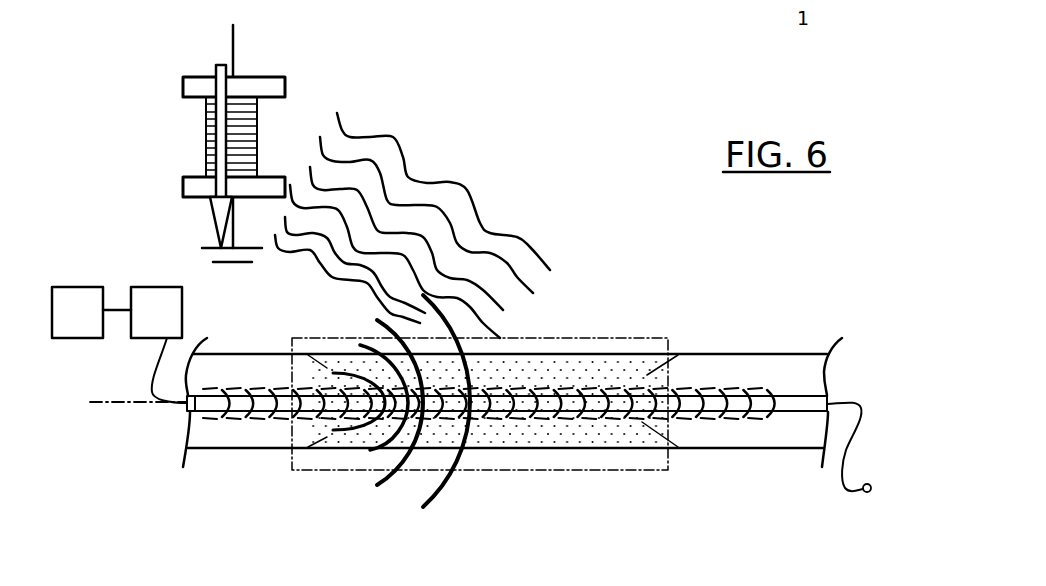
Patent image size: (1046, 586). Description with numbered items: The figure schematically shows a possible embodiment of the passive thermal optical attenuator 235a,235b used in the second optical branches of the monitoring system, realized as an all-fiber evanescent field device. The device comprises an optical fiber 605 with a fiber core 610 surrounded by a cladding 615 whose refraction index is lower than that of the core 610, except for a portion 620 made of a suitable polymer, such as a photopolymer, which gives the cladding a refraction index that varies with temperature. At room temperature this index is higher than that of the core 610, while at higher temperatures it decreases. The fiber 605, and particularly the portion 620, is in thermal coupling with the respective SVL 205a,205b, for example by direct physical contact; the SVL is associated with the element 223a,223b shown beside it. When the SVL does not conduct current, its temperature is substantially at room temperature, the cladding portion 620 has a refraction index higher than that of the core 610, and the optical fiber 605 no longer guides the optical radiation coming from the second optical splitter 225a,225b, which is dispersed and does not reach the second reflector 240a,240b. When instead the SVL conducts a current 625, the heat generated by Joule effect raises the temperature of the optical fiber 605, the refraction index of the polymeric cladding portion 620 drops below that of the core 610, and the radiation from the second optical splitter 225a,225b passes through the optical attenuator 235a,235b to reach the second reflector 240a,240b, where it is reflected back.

The SVL 205a,205b is at (263, 143).
The current 625 is at (207, 143).
The second optical splitter 225a,225b is at (160, 287).
The controller 223a,223b is at (77, 338).
The optical attenuator 235a,235b is at (352, 472).
The cladding portion 620 is at (563, 362).
The fiber core 610 is at (597, 404).
The optical fiber 605 is at (752, 353).
The cladding 615 is at (803, 378).
The second reflector 240a,240b is at (871, 490).